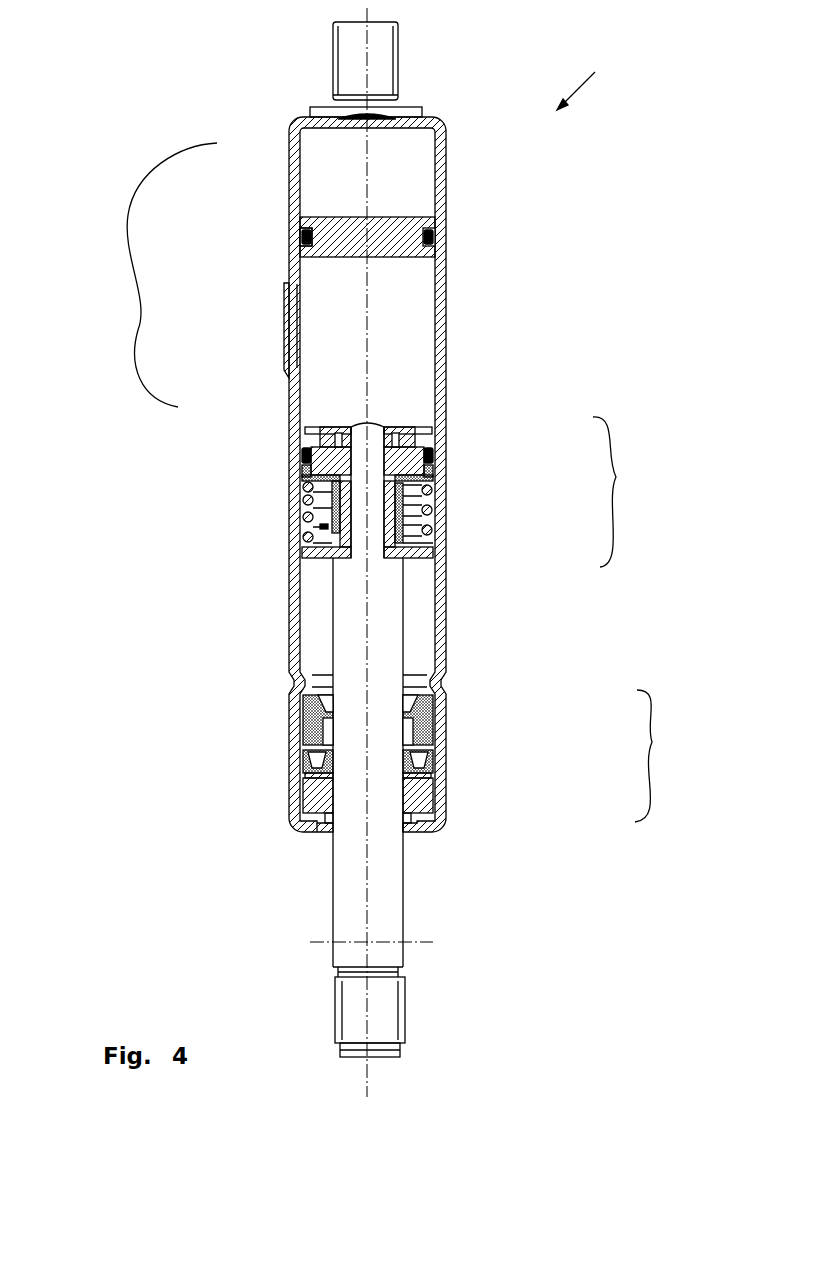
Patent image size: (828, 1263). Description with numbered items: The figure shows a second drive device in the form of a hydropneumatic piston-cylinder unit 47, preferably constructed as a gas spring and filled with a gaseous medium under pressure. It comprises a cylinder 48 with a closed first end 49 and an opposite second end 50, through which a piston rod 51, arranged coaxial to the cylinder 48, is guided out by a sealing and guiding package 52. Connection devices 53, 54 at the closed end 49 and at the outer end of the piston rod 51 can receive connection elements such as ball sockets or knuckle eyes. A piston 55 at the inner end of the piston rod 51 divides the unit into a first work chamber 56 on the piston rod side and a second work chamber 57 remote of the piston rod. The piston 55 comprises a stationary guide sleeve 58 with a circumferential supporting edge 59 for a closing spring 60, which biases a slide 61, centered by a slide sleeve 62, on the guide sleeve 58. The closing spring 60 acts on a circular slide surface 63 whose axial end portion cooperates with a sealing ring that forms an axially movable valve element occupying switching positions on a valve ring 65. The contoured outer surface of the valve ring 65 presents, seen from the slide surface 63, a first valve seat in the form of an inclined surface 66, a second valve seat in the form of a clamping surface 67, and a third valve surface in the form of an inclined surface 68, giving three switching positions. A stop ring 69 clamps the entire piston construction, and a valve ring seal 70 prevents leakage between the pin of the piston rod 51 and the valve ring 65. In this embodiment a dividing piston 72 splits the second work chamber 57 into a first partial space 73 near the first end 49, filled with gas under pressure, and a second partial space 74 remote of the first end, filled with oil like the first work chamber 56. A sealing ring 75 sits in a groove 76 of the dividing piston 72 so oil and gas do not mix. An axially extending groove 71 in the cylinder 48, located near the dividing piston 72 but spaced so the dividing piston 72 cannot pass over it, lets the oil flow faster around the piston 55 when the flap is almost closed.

The piston-cylinder unit 47 is at (591, 77).
The cylinder 48 is at (440, 625).
The closed first end 49 is at (430, 120).
The second end 50 is at (440, 815).
The piston rod 51 is at (400, 915).
The sealing and guiding package 52 is at (497, 756).
The connection device 53 is at (385, 52).
The connection device 54 is at (392, 1023).
The piston 55 is at (624, 492).
The first work chamber 56 is at (430, 658).
The second work chamber 57 is at (157, 275).
The guide sleeve 58 is at (333, 562).
The supporting edge 59 is at (312, 553).
The closing spring 60 is at (303, 500).
The slide 61 is at (323, 527).
The slide sleeve 62 is at (428, 527).
The slide surface 63 is at (305, 477).
The valve ring 65 is at (320, 445).
The inclined surface 66 is at (433, 472).
The clamping surface 67 is at (412, 442).
The inclined surface 68 is at (428, 447).
The stop ring 69 is at (403, 427).
The valve ring seal 70 is at (343, 425).
The groove 71 is at (290, 310).
The dividing piston 72 is at (412, 218).
The first partial space 73 is at (428, 163).
The second partial space 74 is at (428, 267).
The sealing ring 75 is at (432, 238).
The groove 76 is at (302, 233).